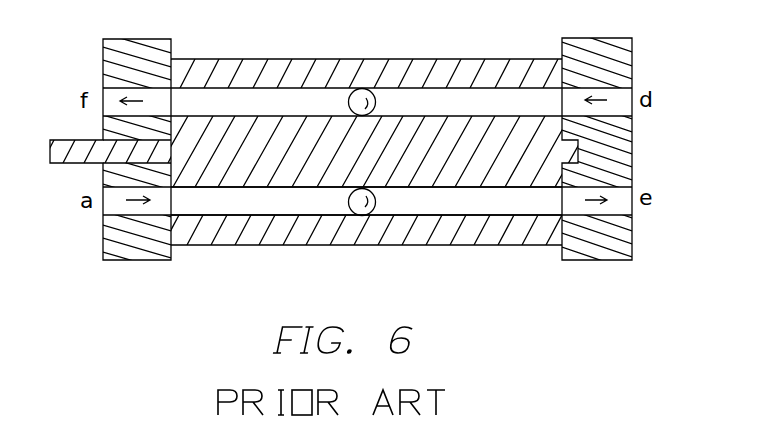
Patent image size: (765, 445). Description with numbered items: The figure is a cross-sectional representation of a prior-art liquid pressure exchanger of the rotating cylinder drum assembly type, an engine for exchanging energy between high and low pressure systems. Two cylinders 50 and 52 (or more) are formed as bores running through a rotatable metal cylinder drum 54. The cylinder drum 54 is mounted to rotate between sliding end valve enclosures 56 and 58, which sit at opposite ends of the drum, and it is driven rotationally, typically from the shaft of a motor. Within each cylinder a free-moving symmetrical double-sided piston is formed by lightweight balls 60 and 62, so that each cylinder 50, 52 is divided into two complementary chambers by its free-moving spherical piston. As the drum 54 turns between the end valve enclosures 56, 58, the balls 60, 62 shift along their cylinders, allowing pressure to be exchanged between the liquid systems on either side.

The cylinder 50 is at (290, 105).
The cylinder 52 is at (288, 198).
The cylinder drum 54 is at (343, 233).
The sliding end valve enclosure 56 is at (137, 252).
The sliding end valve enclosure 58 is at (580, 243).
The ball 60 is at (362, 106).
The ball 62 is at (359, 198).